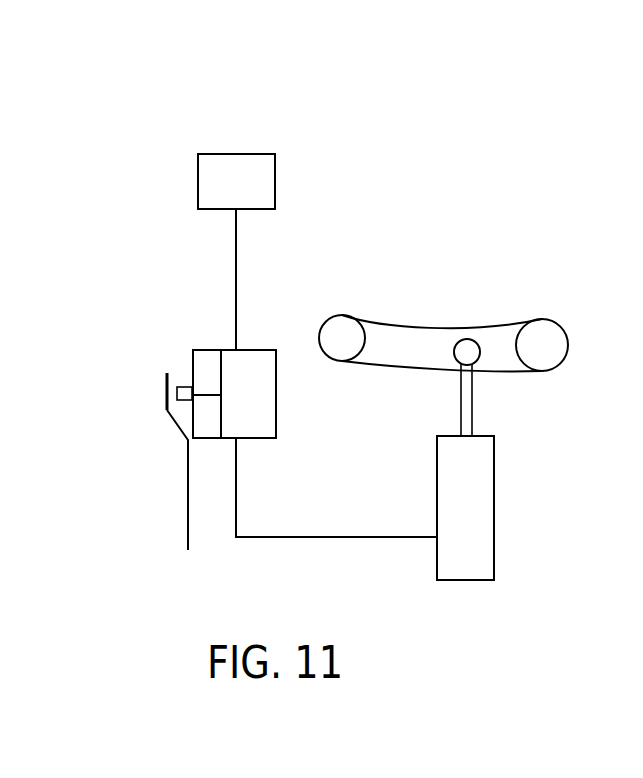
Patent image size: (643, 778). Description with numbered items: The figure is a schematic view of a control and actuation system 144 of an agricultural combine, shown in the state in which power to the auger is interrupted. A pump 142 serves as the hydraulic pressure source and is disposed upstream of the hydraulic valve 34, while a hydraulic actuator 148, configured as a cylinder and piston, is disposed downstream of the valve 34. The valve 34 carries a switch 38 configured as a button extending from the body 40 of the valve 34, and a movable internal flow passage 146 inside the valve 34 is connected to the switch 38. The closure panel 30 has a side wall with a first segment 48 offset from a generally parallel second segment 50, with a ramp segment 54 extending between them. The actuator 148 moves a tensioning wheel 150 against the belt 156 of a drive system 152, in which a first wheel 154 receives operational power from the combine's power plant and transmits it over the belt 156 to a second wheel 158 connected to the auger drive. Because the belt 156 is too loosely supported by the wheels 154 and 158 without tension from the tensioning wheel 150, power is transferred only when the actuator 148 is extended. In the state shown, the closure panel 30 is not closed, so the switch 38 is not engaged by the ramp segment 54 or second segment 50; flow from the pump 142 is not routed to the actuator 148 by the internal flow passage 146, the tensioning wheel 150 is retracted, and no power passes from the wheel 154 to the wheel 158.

The closure panel 30 is at (106, 510).
The hydraulic valve 34 is at (230, 368).
The switch 38 is at (185, 390).
The body 40 is at (500, 372).
The first segment 48 is at (188, 510).
The second segment 50 is at (163, 385).
The ramp segment 54 is at (175, 423).
The pump 142 is at (234, 166).
The control and actuation system 144 is at (155, 124).
The movable internal flow passage 146 is at (222, 411).
The hydraulic actuator 148 is at (494, 552).
The tensioning wheel 150 is at (466, 350).
The drive system 152 is at (448, 282).
The first wheel 154 is at (345, 333).
The belt 156 is at (500, 325).
The second wheel 158 is at (537, 332).